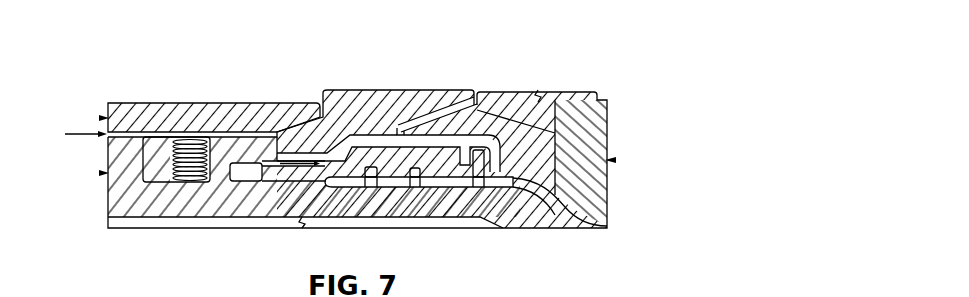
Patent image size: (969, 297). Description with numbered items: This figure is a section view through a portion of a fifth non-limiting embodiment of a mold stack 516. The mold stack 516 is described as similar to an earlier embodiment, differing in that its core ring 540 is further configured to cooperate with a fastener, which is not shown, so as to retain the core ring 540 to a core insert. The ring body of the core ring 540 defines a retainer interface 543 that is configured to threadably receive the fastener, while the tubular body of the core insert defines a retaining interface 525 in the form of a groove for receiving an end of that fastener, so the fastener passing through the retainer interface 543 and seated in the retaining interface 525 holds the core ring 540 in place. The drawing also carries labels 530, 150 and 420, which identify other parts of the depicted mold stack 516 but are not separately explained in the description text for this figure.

The upper housing member 530 is at (207, 91).
The retainer interface 543 is at (186, 140).
The retaining interface 525 is at (188, 165).
The core ring 540 is at (223, 183).
The valve assembly 150 is at (471, 76).
The mold stack 516 is at (665, 107).
The lower housing 420 is at (522, 223).